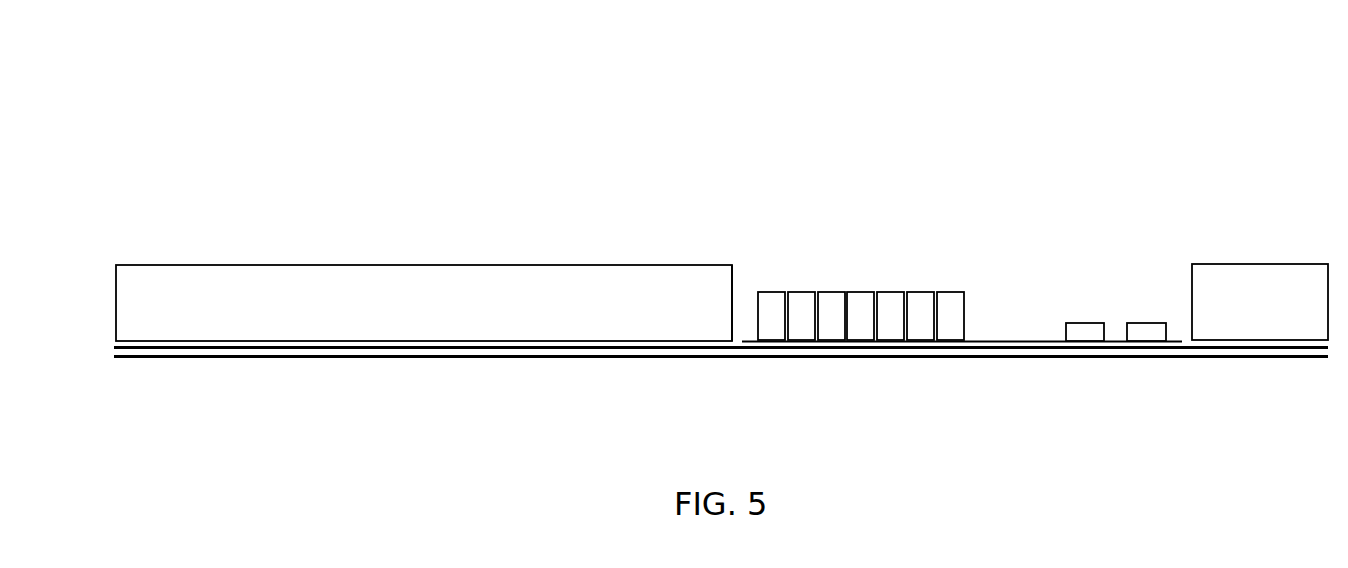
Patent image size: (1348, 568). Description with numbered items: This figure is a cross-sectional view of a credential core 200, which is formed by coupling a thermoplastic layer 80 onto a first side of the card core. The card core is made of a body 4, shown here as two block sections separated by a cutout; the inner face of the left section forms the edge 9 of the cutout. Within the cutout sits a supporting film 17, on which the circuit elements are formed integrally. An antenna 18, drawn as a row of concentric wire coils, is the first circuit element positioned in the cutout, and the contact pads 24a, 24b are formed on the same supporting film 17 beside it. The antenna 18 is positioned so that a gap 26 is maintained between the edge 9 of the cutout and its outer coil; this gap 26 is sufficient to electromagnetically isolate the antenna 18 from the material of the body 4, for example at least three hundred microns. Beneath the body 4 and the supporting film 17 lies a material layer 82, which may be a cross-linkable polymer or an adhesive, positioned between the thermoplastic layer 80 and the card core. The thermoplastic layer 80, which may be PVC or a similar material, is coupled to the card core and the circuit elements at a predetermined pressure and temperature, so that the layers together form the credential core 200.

The credential core 200 is at (1022, 101).
The body 4 is at (435, 317).
The edge 9 is at (733, 296).
The material layer 82 is at (116, 347).
The thermoplastic layer 80 is at (1045, 358).
The supporting film 17 is at (999, 341).
The gap 26 is at (861, 249).
The antenna 18 is at (895, 300).
The contact pad 24a is at (1077, 328).
The contact pad 24b is at (1150, 328).